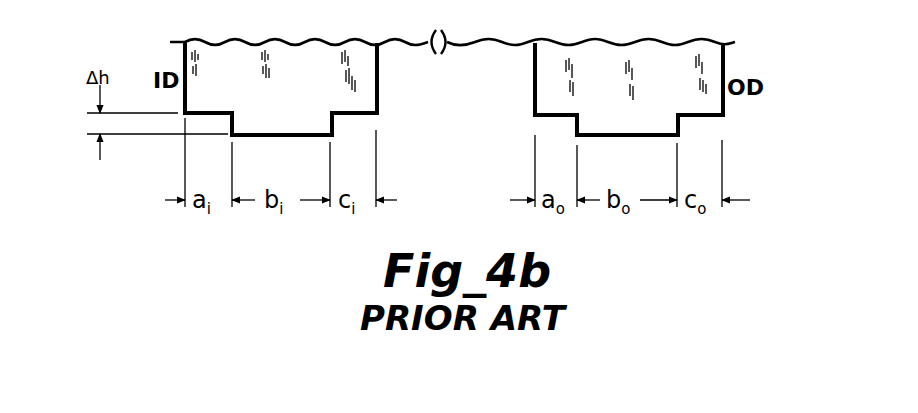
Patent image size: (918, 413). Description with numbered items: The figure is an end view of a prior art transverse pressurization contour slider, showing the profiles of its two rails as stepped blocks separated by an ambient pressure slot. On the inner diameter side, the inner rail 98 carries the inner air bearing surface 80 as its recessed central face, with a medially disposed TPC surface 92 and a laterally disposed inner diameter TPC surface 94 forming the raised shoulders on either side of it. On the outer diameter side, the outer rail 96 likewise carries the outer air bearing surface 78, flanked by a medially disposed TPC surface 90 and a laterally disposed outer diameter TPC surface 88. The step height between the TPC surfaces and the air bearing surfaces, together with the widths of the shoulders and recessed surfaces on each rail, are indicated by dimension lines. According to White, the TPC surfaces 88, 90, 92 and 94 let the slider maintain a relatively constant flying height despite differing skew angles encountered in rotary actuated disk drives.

The outer air bearing surface 78 is at (612, 142).
The inner air bearing surface 80 is at (292, 140).
The outer diameter TPC surface 88 is at (703, 118).
The TPC surface 90 is at (548, 119).
The TPC surface 92 is at (355, 117).
The inner diameter TPC surface 94 is at (205, 117).
The outer rail 96 is at (768, 85).
The inner rail 98 is at (405, 80).